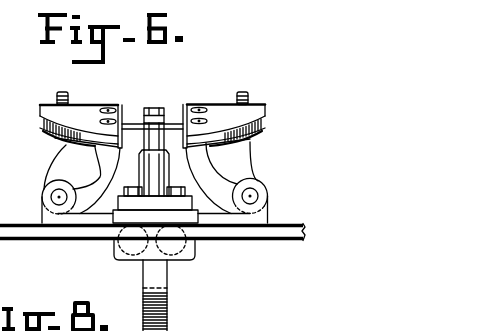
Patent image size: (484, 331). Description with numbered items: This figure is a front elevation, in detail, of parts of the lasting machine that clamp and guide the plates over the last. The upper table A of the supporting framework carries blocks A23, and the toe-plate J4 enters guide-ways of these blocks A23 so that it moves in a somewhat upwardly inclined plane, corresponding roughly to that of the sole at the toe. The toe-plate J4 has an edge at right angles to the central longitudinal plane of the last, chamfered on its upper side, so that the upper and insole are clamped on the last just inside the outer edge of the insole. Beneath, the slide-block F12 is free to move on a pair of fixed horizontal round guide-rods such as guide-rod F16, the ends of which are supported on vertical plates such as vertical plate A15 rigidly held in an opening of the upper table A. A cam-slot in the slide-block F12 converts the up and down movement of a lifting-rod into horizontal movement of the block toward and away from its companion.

The toe-plate J4 is at (137, 107).
The blocks A23 is at (275, 151).
The upper table A is at (42, 240).
The vertical plate A15 is at (115, 259).
The guide-rod F16 is at (176, 238).
The slide-block F12 is at (183, 257).